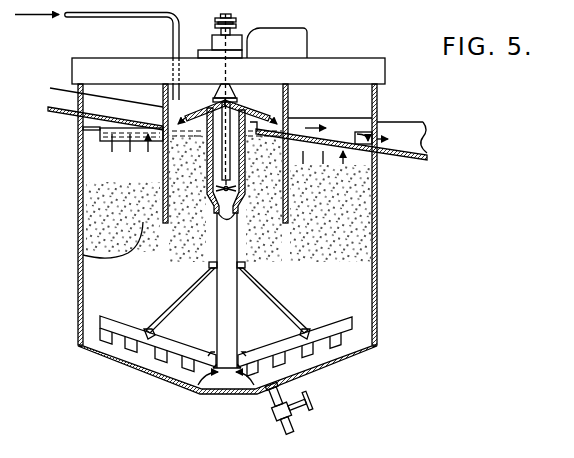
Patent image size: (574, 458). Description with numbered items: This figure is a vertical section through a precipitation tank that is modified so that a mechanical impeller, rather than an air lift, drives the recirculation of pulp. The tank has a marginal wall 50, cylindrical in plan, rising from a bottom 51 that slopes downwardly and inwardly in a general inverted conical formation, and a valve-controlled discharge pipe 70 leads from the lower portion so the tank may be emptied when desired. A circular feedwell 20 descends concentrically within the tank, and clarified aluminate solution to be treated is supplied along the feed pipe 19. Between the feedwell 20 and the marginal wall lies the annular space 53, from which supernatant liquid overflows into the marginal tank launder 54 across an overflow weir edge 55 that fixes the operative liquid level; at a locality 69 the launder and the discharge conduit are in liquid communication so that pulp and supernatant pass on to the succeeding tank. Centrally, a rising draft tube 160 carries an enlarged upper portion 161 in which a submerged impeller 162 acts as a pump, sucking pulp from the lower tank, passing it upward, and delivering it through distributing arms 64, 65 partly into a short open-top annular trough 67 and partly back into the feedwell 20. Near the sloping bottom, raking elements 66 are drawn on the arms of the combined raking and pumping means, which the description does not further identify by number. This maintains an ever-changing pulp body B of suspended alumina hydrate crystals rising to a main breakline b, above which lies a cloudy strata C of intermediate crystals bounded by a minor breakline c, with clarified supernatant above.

The feed pipe or conduit 19 is at (68, 105).
The feedwell 20 is at (131, 152).
The marginal wall 50 is at (376, 232).
The bottom 51 is at (318, 369).
The annular space 53 is at (355, 175).
The marginal tank launder 54 is at (90, 130).
The overflow weir edge 55 is at (112, 125).
The distributing arm 64 is at (205, 110).
The distributing arm 65 is at (245, 107).
The rake teeth 66 is at (338, 345).
The annular trough 67 is at (284, 118).
The liquid communication 69 is at (362, 136).
The valve-controlled discharge pipe 70 is at (294, 417).
The draft tube 160 is at (238, 249).
The enlarged upper portion 161 is at (246, 184).
The impeller 162 is at (226, 302).
The minor breakline c is at (107, 183).
The cloudy strata C is at (100, 208).
The main breakline b is at (103, 222).
The pulp body B is at (83, 253).